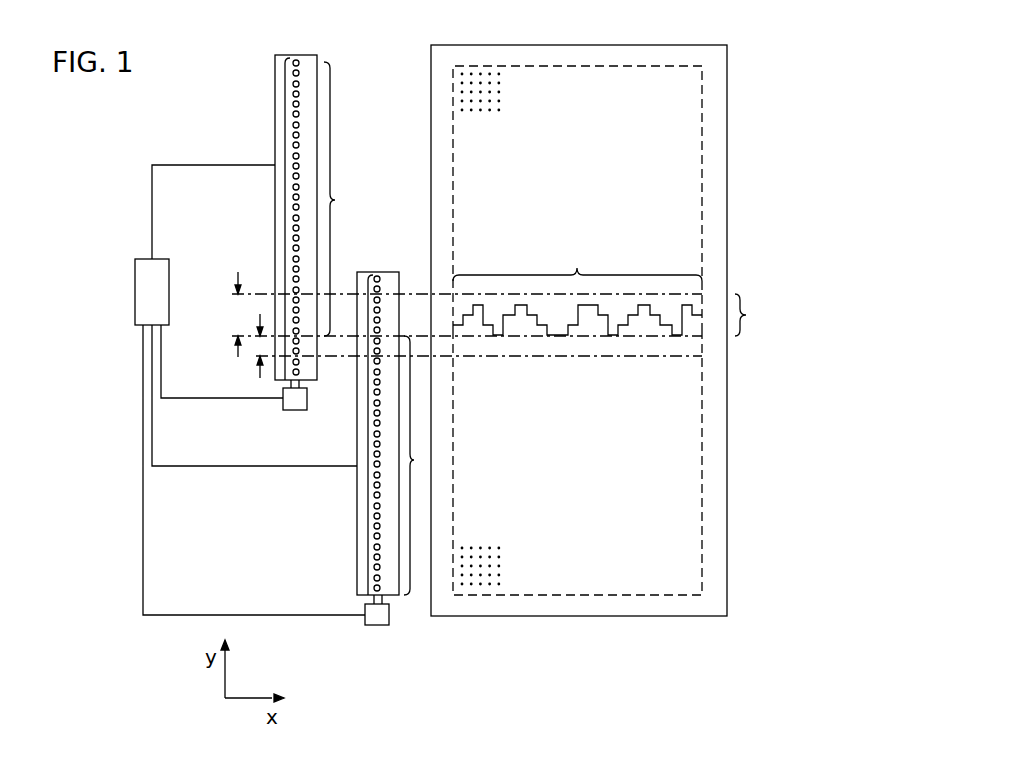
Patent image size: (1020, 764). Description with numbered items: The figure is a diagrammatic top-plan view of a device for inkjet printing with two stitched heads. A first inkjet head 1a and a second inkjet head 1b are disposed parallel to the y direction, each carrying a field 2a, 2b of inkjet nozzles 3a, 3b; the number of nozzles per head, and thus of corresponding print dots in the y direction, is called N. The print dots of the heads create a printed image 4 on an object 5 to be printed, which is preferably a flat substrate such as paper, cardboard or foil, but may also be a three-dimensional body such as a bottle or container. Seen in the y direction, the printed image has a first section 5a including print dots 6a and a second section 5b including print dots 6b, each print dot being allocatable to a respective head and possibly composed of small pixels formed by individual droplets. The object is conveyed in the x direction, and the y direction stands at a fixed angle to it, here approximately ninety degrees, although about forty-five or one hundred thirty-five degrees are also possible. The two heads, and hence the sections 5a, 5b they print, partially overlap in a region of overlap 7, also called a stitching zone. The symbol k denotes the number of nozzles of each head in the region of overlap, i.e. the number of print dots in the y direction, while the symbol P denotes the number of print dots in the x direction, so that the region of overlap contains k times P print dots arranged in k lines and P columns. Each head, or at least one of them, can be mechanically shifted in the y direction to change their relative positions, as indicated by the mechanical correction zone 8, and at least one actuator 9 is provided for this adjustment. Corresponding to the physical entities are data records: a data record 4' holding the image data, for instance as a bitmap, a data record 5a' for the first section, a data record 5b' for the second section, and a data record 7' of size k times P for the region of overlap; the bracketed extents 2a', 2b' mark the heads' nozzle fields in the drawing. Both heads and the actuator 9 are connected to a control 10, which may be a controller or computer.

The first inkjet head 1a is at (251, 194).
The second inkjet head 1b is at (346, 489).
The field of inkjet nozzles 2a is at (237, 219).
The nozzle row region of first head 2a' is at (349, 199).
The field of inkjet nozzles 2b is at (342, 435).
The nozzle row region of second head 2b' is at (433, 504).
The inkjet nozzles 3a is at (296, 82).
The inkjet nozzles 3b is at (378, 559).
The printed image 4 is at (579, 312).
The data record 4' is at (579, 312).
The object to be printed 5 is at (635, 308).
The first section 5a is at (635, 198).
The data record 5a' is at (635, 198).
The second section 5b is at (635, 462).
The data record 5b' is at (635, 462).
The print dots 6a is at (479, 74).
The print dots 6b is at (490, 585).
The region of overlap 7 is at (449, 295).
The data record 7' is at (449, 295).
The mechanical correction zone 8 is at (258, 370).
The actuator 9 is at (294, 411).
The control 10 is at (146, 294).
The number of print dots in the x direction P is at (577, 287).
The number of nozzles in the region of overlap k is at (753, 315).